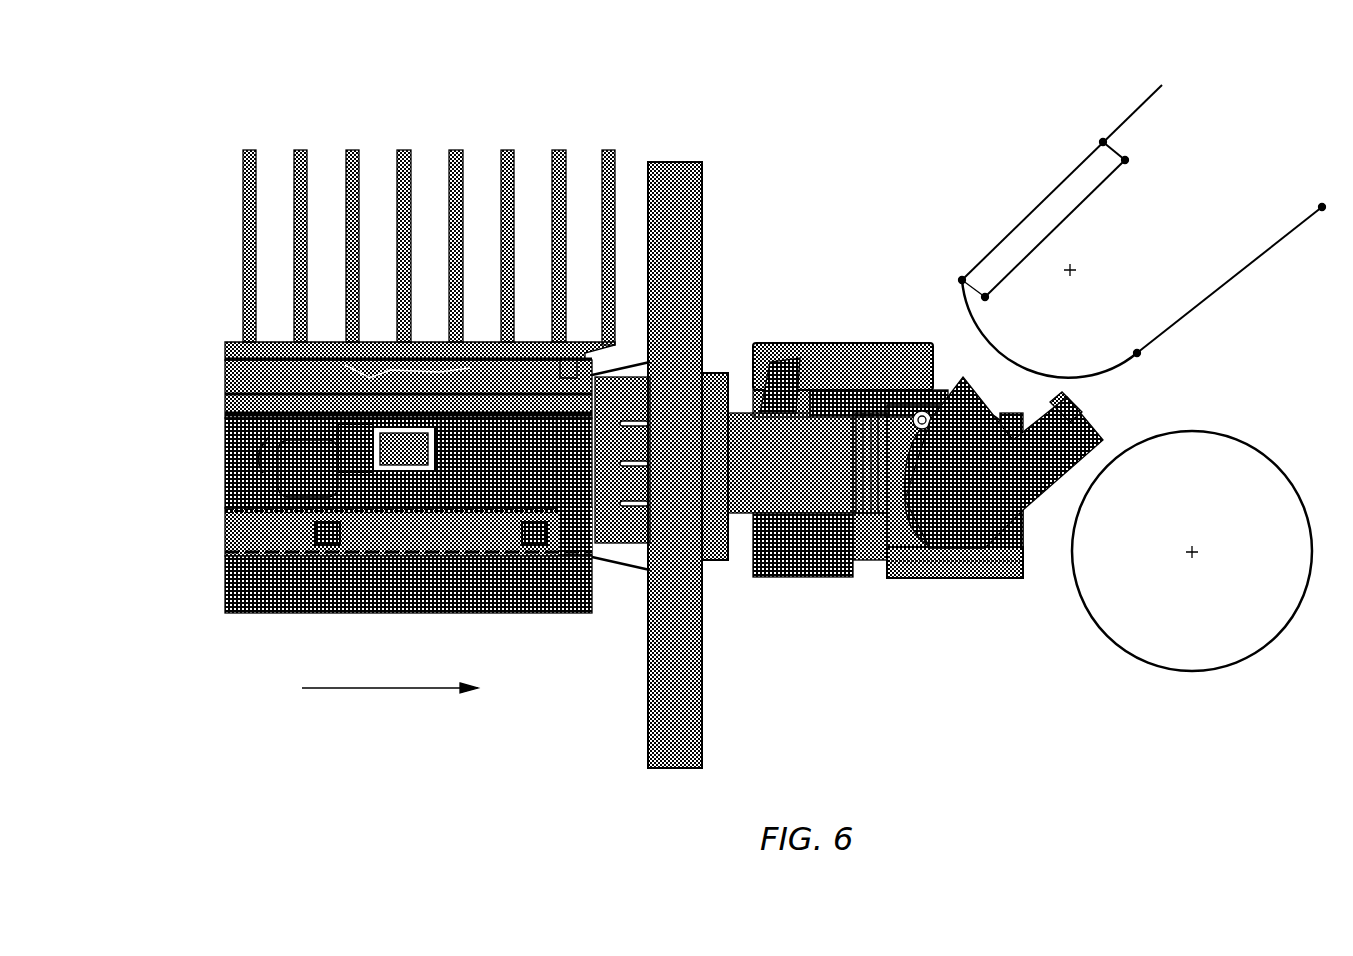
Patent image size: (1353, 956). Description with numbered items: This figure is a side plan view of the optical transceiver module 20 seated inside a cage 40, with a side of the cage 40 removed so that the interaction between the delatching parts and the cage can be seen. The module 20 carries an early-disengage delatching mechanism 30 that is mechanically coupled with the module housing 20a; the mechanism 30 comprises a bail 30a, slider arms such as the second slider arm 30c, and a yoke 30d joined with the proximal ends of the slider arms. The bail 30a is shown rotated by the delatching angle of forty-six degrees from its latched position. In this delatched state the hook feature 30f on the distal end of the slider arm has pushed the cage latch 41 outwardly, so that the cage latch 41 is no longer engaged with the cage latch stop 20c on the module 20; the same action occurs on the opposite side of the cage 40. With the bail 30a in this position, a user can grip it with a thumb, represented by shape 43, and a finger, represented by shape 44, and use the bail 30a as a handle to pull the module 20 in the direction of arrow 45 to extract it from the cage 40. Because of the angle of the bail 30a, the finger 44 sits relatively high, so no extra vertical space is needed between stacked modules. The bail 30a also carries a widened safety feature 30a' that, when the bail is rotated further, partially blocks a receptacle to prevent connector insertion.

The optical transceiver module 20 is at (834, 276).
The housing 20a is at (811, 343).
The cage latch stop 20c is at (312, 445).
The early-disengage delatching mechanism 30 is at (922, 592).
The bail 30a is at (1004, 466).
The safety feature 30a' is at (1031, 394).
The second slider arm 30c is at (263, 473).
The yoke 30d is at (975, 575).
The hook feature 30f is at (353, 470).
The cage 40 is at (483, 513).
The cage latch 41 is at (393, 473).
The thumb shape 43 is at (1070, 265).
The finger shape 44 is at (1192, 558).
The extraction direction arrow 45 is at (370, 688).